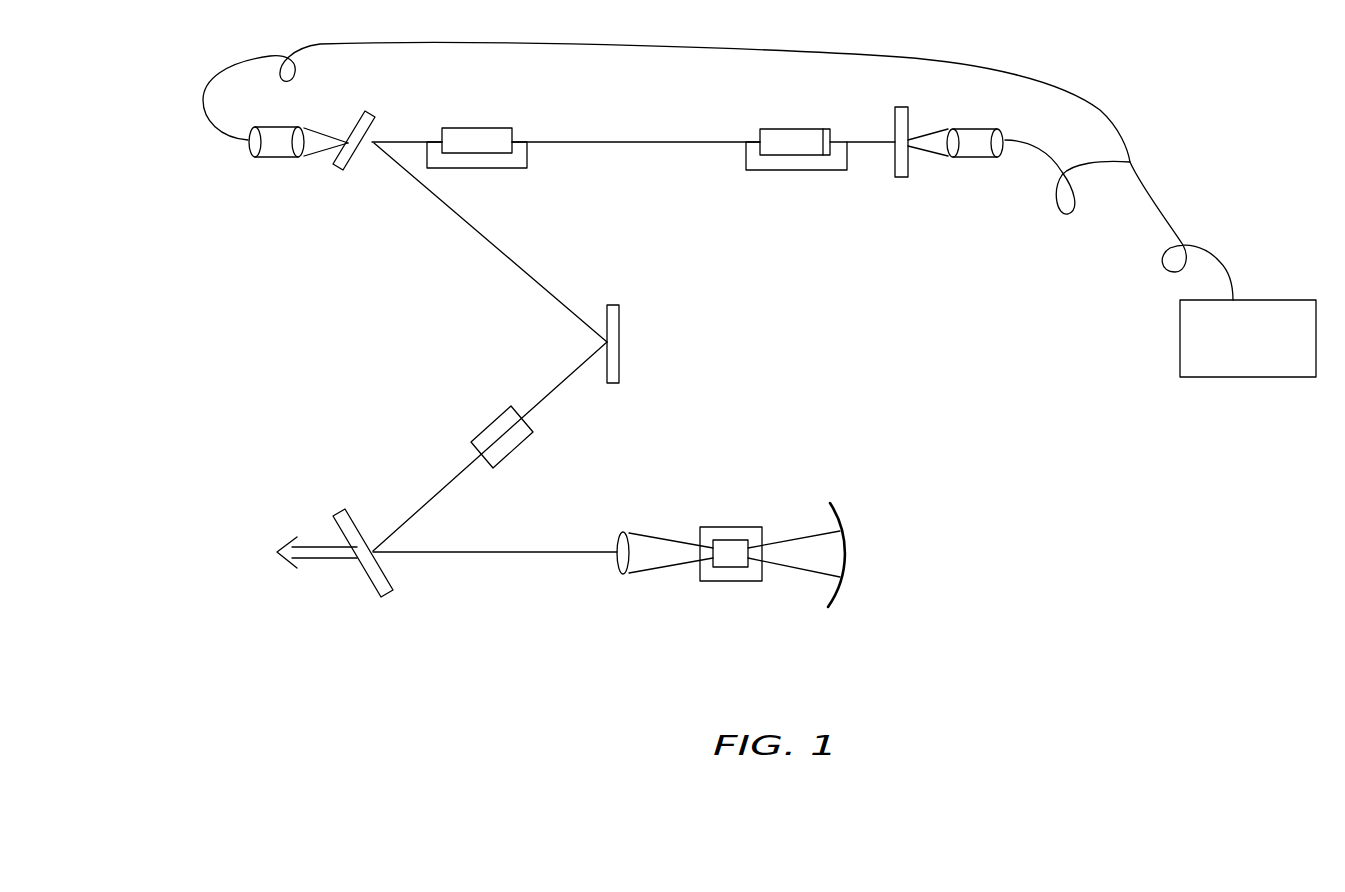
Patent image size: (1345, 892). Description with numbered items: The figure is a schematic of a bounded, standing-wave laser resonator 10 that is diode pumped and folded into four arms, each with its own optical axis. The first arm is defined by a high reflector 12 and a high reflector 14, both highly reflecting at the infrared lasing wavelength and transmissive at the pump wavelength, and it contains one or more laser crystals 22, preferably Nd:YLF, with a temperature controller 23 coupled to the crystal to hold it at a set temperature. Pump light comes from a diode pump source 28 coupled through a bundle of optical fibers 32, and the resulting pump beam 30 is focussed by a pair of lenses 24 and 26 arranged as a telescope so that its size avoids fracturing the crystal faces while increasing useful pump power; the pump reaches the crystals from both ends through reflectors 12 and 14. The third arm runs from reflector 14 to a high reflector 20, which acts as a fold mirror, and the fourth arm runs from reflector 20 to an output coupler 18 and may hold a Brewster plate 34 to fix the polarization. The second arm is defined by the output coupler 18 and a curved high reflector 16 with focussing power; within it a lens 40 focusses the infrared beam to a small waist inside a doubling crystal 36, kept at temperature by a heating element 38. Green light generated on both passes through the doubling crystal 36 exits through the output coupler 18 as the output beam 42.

The resonator 10 is at (960, 340).
The high reflector 12 is at (917, 123).
The high reflector 14 is at (362, 163).
The high reflector 16 is at (824, 563).
The output coupler 18 is at (384, 572).
The high reflector 20 is at (620, 340).
The laser crystal 22 is at (636, 119).
The temperature controller 23 is at (637, 179).
The lens 24 is at (579, 139).
The lens 26 is at (627, 169).
The diode pump source 28 is at (1255, 317).
The pump beam 30 is at (626, 148).
The optical fibers 32 is at (718, 171).
The Brewster plate 34 is at (514, 442).
The doubling crystal 36 is at (715, 524).
The heating element 38 is at (731, 577).
The lens 40 is at (644, 565).
The output beam 42 is at (317, 580).